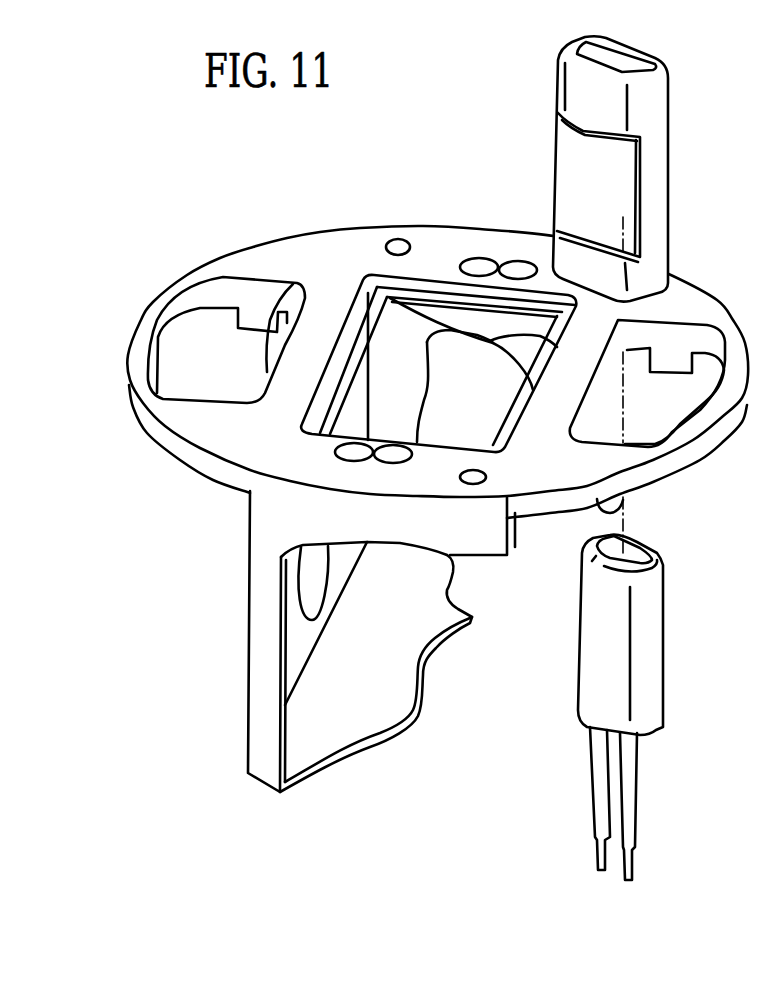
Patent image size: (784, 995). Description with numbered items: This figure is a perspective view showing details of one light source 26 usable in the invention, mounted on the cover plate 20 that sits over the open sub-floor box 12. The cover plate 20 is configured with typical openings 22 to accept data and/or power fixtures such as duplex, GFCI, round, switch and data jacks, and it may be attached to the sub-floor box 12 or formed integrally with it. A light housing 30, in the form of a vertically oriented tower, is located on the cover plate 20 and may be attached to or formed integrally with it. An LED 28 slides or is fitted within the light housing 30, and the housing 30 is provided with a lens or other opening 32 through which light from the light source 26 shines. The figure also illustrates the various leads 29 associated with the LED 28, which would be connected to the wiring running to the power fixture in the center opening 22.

The sub-floor box 12 is at (250, 602).
The cover plate 20 is at (257, 450).
The openings 22 is at (368, 280).
The light source 26 is at (663, 593).
The LED 28 is at (577, 610).
The sensor leads 29 is at (600, 783).
The light housing 30 is at (670, 143).
The opening 32 is at (592, 140).